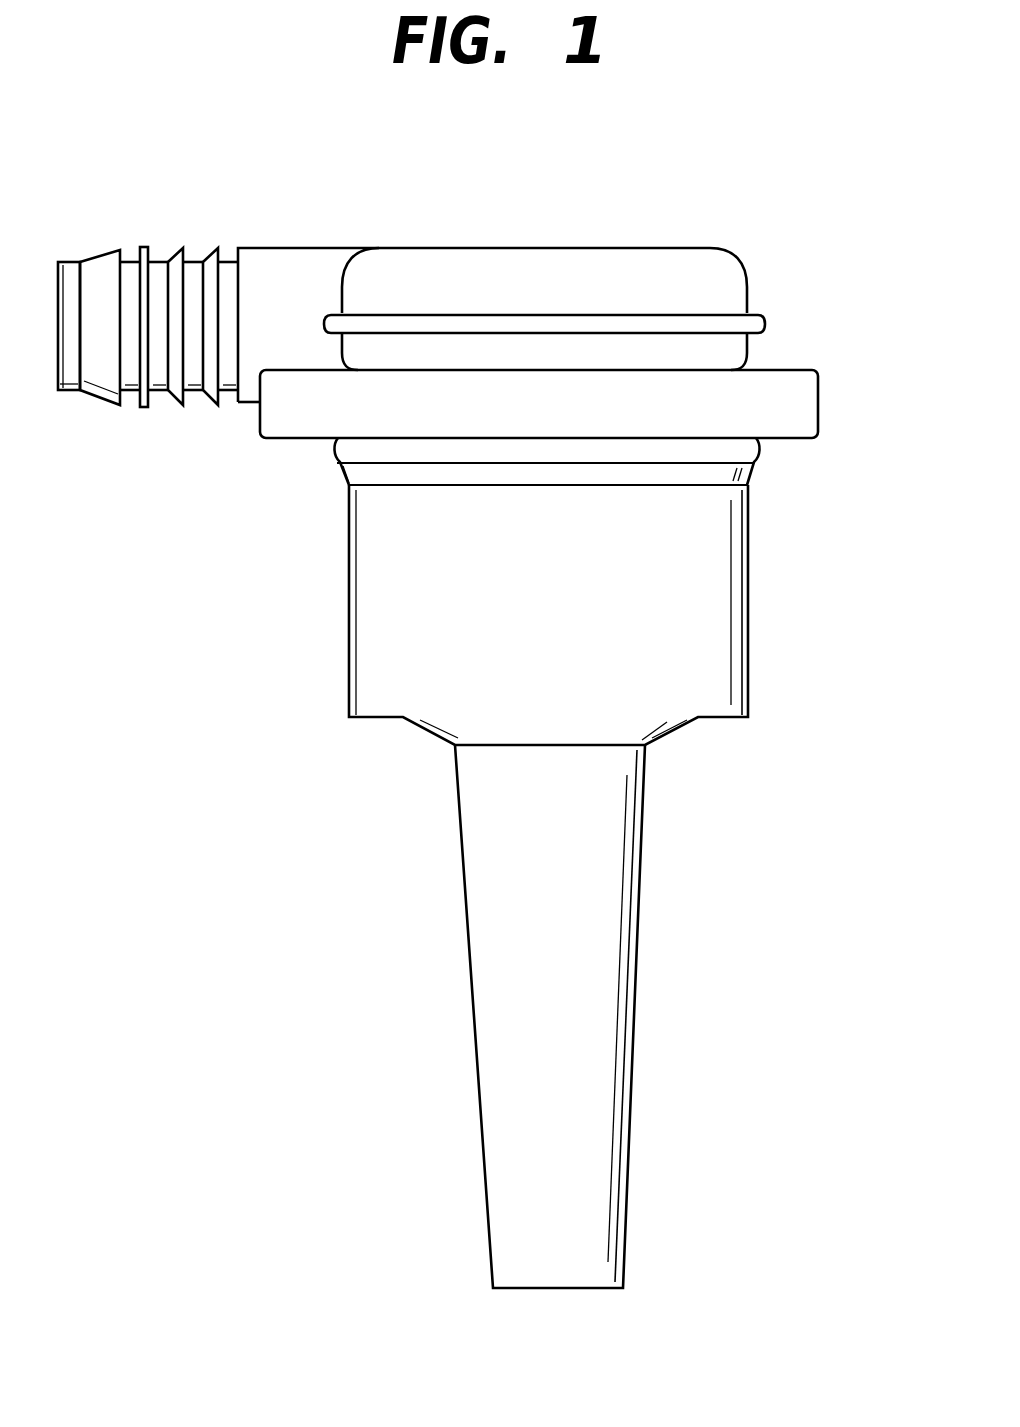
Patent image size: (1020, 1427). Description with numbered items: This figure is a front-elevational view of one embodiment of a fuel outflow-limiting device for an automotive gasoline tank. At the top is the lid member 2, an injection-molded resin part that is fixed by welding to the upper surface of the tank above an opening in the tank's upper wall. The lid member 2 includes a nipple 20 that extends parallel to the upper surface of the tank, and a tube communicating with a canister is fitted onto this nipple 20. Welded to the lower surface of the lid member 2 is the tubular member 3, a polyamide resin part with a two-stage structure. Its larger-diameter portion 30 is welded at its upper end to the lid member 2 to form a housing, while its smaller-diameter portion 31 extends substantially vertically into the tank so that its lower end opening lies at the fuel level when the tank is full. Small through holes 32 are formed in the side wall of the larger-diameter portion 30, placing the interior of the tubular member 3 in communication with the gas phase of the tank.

The lid member 2 is at (720, 248).
The tubular member 3 is at (764, 592).
The nipple 20 is at (92, 262).
The larger-diameter portion 30 is at (737, 675).
The smaller-diameter portion 31 is at (633, 1093).
The through holes 32 is at (335, 450).